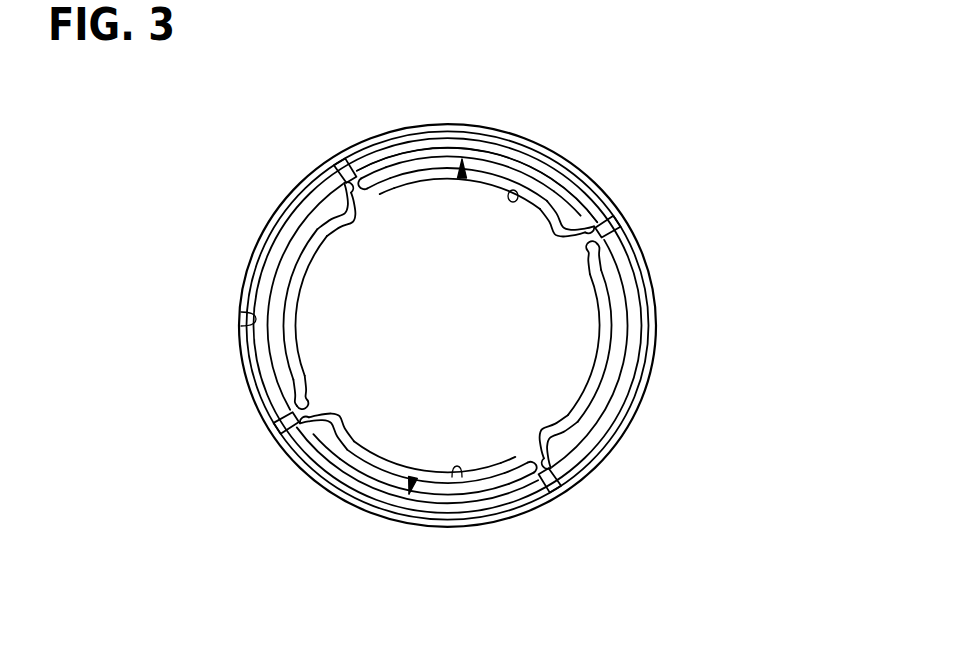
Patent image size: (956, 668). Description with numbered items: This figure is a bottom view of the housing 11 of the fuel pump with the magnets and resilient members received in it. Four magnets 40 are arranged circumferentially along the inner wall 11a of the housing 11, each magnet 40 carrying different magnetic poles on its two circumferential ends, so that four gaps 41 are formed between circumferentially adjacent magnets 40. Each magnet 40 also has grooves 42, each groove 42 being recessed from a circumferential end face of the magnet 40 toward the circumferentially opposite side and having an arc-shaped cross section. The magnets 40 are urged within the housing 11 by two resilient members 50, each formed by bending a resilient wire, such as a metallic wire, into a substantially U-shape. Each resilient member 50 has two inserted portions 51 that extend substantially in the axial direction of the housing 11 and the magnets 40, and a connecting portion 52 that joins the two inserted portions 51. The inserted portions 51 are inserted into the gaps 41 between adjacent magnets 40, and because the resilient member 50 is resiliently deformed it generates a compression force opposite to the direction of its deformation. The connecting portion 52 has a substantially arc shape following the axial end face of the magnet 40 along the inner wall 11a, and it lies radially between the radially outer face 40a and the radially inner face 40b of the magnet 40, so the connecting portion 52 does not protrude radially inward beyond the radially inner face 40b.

The housing 11 is at (657, 396).
The inner wall 11a is at (244, 319).
The magnet 40 is at (471, 325).
The radially outer face 40a is at (512, 142).
The radially inner face 40b is at (520, 192).
The gap 41 is at (336, 166).
The groove 42 is at (366, 192).
The resilient member 50 is at (460, 178).
The inserted portion 51 is at (341, 172).
The connecting portion 52 is at (496, 148).